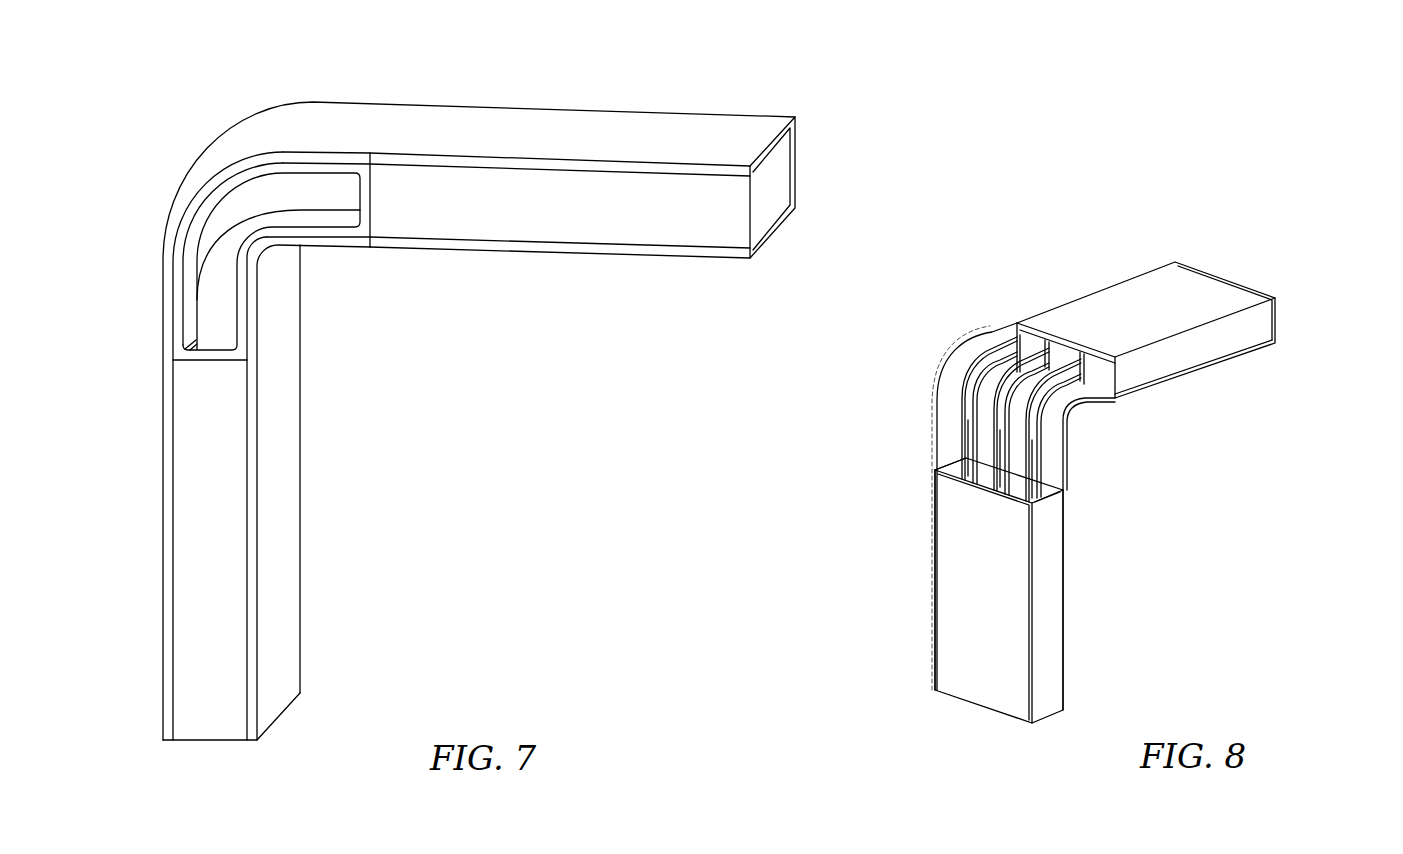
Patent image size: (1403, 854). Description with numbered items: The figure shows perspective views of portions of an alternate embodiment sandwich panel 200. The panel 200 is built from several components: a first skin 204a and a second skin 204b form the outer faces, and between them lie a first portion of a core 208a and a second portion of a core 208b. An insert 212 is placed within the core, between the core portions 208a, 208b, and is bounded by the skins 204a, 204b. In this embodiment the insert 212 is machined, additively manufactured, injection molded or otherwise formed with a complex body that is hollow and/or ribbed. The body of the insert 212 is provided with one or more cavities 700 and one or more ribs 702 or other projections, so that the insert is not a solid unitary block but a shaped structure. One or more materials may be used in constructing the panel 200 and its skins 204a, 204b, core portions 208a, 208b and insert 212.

In FIG. 7, the panel 200 is at (196, 102).
In FIG. 8, the panel 200 is at (1020, 262).
In FIG. 7, the first skin 204a is at (288, 331).
In FIG. 8, the first skin 204a is at (1067, 620).
In FIG. 7, the second skin 204b is at (165, 305).
In FIG. 8, the second skin 204b is at (917, 660).
In FIG. 7, the first portion of a core 208a is at (223, 728).
In FIG. 8, the first portion of a core 208a is at (1050, 700).
In FIG. 7, the second portion of a core 208b is at (773, 175).
In FIG. 8, the second portion of a core 208b is at (1258, 321).
In FIG. 7, the insert 212 is at (172, 339).
In FIG. 8, the insert 212 is at (938, 445).
In FIG. 7, the cavities 700 is at (218, 334).
In FIG. 8, the cavities 700 is at (1061, 364).
In FIG. 7, the ribs 702 is at (224, 228).
In FIG. 8, the ribs 702 is at (1025, 480).